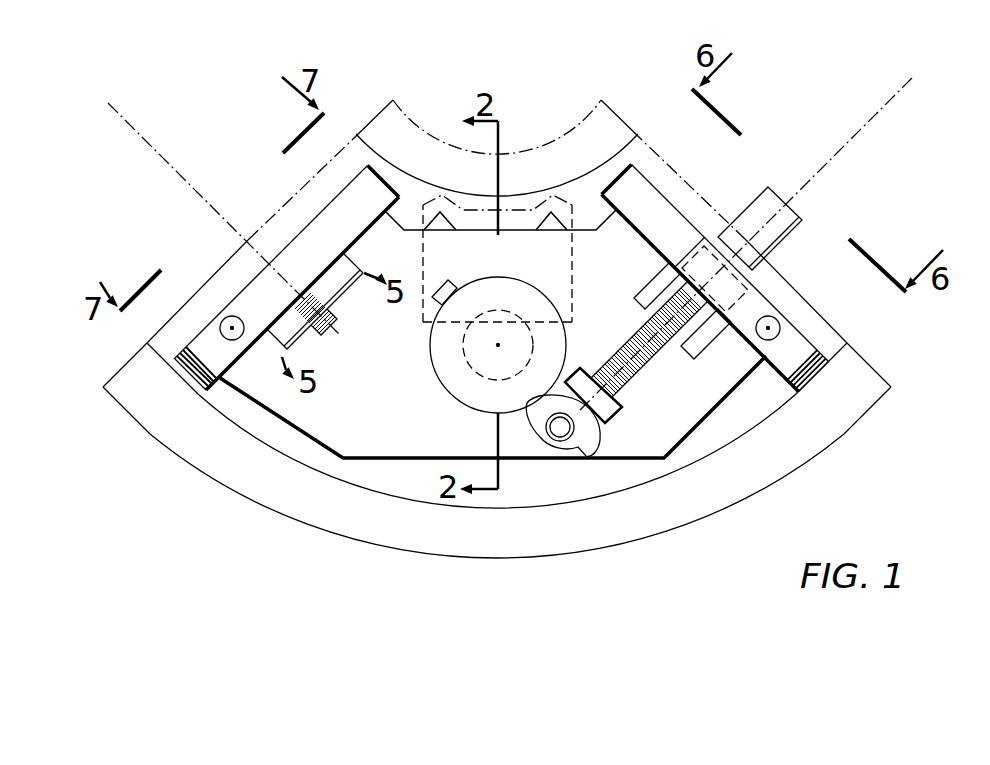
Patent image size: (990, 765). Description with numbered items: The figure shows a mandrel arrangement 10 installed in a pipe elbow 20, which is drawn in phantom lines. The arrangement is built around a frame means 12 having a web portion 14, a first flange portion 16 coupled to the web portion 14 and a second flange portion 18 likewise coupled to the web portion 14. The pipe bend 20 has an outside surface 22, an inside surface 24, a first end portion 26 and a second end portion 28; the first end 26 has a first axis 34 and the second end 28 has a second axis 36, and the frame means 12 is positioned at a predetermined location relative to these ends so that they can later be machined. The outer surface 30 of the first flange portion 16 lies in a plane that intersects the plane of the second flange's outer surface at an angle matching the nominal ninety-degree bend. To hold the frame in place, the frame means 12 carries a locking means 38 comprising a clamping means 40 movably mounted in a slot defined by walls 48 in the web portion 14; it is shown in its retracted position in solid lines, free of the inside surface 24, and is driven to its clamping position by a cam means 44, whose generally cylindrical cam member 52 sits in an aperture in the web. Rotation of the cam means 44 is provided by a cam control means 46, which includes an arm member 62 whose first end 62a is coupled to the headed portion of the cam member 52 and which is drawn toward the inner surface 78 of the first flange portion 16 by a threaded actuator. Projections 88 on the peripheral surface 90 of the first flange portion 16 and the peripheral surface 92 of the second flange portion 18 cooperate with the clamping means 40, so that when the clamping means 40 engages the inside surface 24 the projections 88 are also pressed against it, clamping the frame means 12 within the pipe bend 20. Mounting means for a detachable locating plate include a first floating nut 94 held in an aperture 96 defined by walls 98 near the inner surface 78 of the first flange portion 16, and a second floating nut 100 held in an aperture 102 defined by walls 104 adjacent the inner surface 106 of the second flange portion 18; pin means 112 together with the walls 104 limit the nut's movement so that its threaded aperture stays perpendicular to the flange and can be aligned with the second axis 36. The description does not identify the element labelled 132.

The mandrel arrangement 10 is at (735, 432).
The frame means 12 is at (400, 460).
The web portion 14 is at (636, 352).
The first flange portion 16 is at (762, 296).
The second flange portion 18 is at (237, 296).
The pipe elbow 20 is at (861, 416).
The outside surface 22 is at (337, 536).
The inside surface 24 is at (313, 467).
The first end portion 26 is at (847, 332).
The second end portion 28 is at (148, 343).
The outer surface of first flange portion 30 is at (800, 290).
The first axis 34 is at (873, 116).
The second axis 36 is at (128, 122).
The locking means 38 is at (436, 403).
The clamping means 40 is at (551, 212).
The cam means 44 is at (520, 412).
The cam control means 46 is at (782, 189).
The walls defining clamping means receiving slot 48 is at (346, 318).
The cam member 52 is at (521, 284).
The arm member 62 is at (597, 453).
The first end of arm member 62a is at (450, 282).
The inner surface of first flange portion 78 is at (765, 364).
The projections 88 is at (238, 320).
The peripheral surface of first flange portion 90 is at (672, 234).
The peripheral surface of second flange portion 92 is at (356, 232).
The first floating nut 94 is at (708, 330).
The aperture for first floating nut 96 is at (666, 268).
The walls defining first nut aperture 98 is at (641, 306).
The second floating nut 100 is at (312, 332).
The aperture for second floating nut 102 is at (292, 351).
The walls defining second nut aperture 104 is at (343, 267).
The inner surface of second flange portion 106 is at (217, 392).
The pin means 112 is at (312, 277).
The arm edge 132 is at (337, 197).